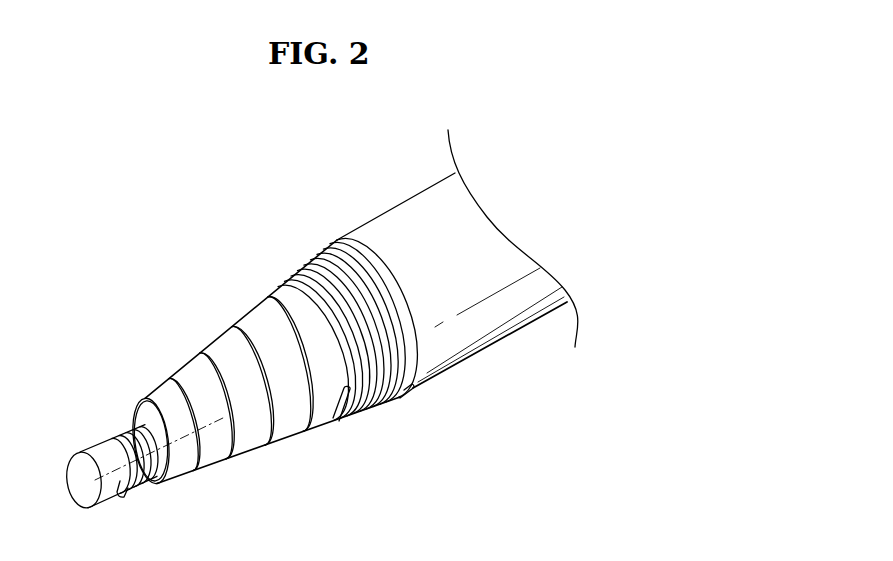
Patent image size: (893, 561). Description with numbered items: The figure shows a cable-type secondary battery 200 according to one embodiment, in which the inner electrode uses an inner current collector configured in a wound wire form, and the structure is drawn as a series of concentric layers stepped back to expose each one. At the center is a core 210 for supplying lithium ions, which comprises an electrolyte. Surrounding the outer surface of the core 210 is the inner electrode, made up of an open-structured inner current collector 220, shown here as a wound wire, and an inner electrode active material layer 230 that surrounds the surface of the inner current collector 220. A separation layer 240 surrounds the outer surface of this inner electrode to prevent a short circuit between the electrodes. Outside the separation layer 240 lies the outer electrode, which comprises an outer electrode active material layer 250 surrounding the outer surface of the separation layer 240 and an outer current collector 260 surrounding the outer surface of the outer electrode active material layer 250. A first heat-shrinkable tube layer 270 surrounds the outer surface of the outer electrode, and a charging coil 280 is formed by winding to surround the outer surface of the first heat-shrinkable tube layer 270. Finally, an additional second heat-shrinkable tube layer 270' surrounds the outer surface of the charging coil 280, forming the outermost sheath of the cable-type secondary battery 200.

The cable-type secondary battery 200 is at (160, 243).
The core 210 is at (97, 455).
The inner current collector 220 is at (128, 421).
The inner electrode active material layer 230 is at (141, 405).
The separation layer 240 is at (165, 382).
The outer electrode active material layer 250 is at (195, 360).
The outer current collector 260 is at (229, 337).
The first heat-shrinkable tube layer 270 is at (285, 353).
The second heat-shrinkable tube layer 270' is at (454, 264).
The charging coil 280 is at (286, 291).